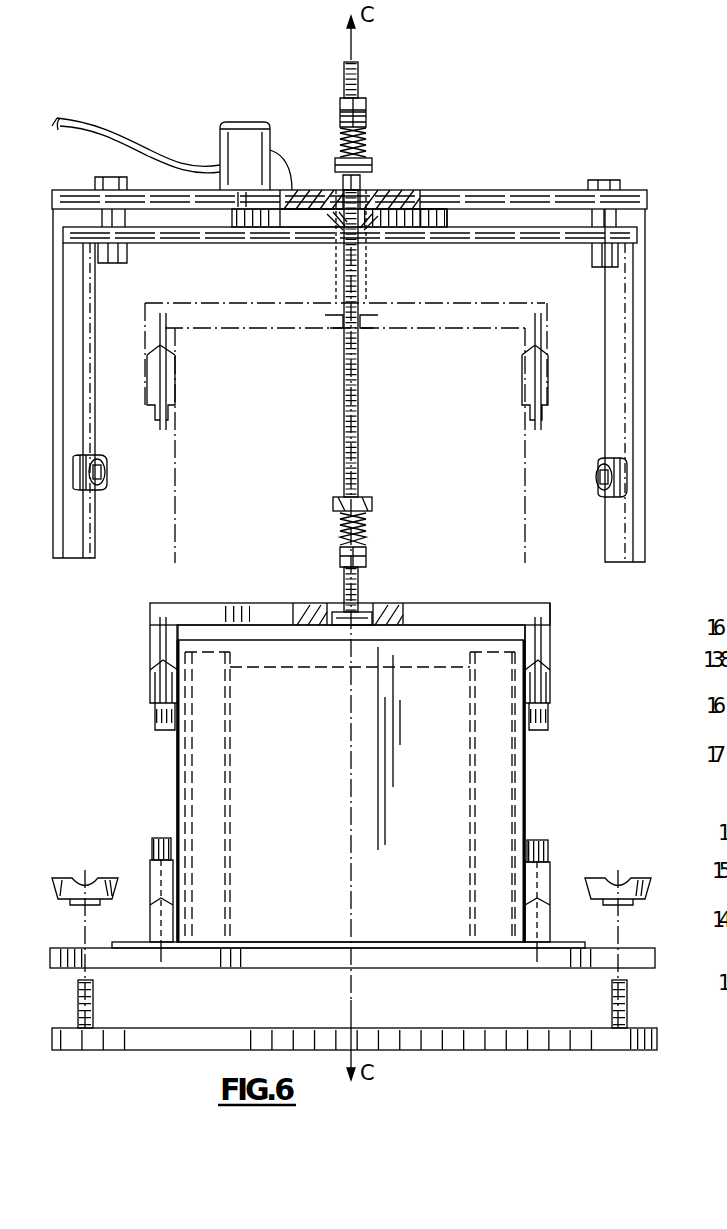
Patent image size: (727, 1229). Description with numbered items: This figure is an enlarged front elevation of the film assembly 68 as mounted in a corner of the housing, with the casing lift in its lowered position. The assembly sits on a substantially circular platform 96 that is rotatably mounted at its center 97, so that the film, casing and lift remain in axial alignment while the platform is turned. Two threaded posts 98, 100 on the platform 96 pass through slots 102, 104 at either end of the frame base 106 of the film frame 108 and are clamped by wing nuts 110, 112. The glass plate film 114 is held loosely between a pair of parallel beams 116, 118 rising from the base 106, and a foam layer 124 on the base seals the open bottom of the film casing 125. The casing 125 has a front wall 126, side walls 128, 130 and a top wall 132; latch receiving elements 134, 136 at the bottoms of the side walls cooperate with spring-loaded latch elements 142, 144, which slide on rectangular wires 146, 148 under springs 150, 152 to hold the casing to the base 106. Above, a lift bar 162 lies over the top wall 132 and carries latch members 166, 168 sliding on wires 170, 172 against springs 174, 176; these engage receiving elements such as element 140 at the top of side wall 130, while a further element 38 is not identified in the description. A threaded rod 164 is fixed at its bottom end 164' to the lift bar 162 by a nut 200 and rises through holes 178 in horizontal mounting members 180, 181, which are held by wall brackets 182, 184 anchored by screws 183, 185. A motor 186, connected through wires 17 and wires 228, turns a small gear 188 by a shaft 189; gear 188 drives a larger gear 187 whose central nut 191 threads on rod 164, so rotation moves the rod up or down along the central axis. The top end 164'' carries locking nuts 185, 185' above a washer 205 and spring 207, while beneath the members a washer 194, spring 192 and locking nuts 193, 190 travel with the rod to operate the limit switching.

The wires 17 is at (90, 118).
The clamp flange 38 is at (150, 645).
The film assembly 68 is at (92, 622).
The circular platform 96 is at (465, 1050).
The center 97 is at (358, 1022).
The threaded post 98 is at (95, 1013).
The threaded post 100 is at (628, 1011).
The slot 102 is at (85, 946).
The slot 104 is at (630, 947).
The frame base 106 is at (447, 964).
The film frame 108 is at (568, 818).
The wing nut 110 is at (55, 871).
The wing nut 112 is at (635, 882).
The glass plate film 114 is at (440, 662).
The beam 116 is at (175, 768).
The beam 118 is at (540, 766).
The foam layer 124 is at (372, 940).
The film casing 125 is at (147, 804).
The front wall 126 is at (435, 856).
The side wall 128 is at (178, 803).
The side wall 130 is at (527, 800).
The top wall 132 is at (510, 633).
The latch receiving element 134 is at (150, 925).
The latch receiving element 136 is at (550, 930).
The receiving element 140 is at (548, 657).
The latch element 142 is at (150, 871).
The latch element 144 is at (550, 882).
The rectangular wire 146 is at (165, 962).
The rectangular wire 148 is at (535, 948).
The spring 150 is at (152, 848).
The spring 152 is at (548, 852).
The lift bar 162 is at (262, 603).
The threaded rod 164 is at (373, 343).
The bottom end of rod 164' is at (385, 589).
The top end of rod 164'' is at (380, 64).
The latch member 166 is at (150, 672).
The latch member 168 is at (550, 690).
The wire 170 is at (150, 623).
The wire 172 is at (545, 645).
The spring 174 is at (133, 724).
The spring 176 is at (548, 716).
The hole 178 is at (367, 191).
The top mounting member 180 is at (543, 190).
The bottom mounting member 181 is at (470, 243).
The wall bracket 182 is at (88, 408).
The screw 183 is at (107, 483).
The wall bracket 184 is at (633, 404).
The locking nut 185 is at (483, 309).
The locking nut 185' is at (320, 93).
The motor 186 is at (235, 120).
The larger gear 187 is at (450, 225).
The small gear 188 is at (233, 227).
The shaft 189 is at (230, 199).
The locking nut 190 is at (340, 555).
The nut 191 is at (332, 232).
The spring 192 is at (372, 522).
The locking nut 193 is at (368, 556).
The washer 194 is at (372, 502).
The nut 200 is at (345, 625).
The washer 205 is at (374, 166).
The spring 207 is at (369, 142).
The wires 228 is at (271, 185).